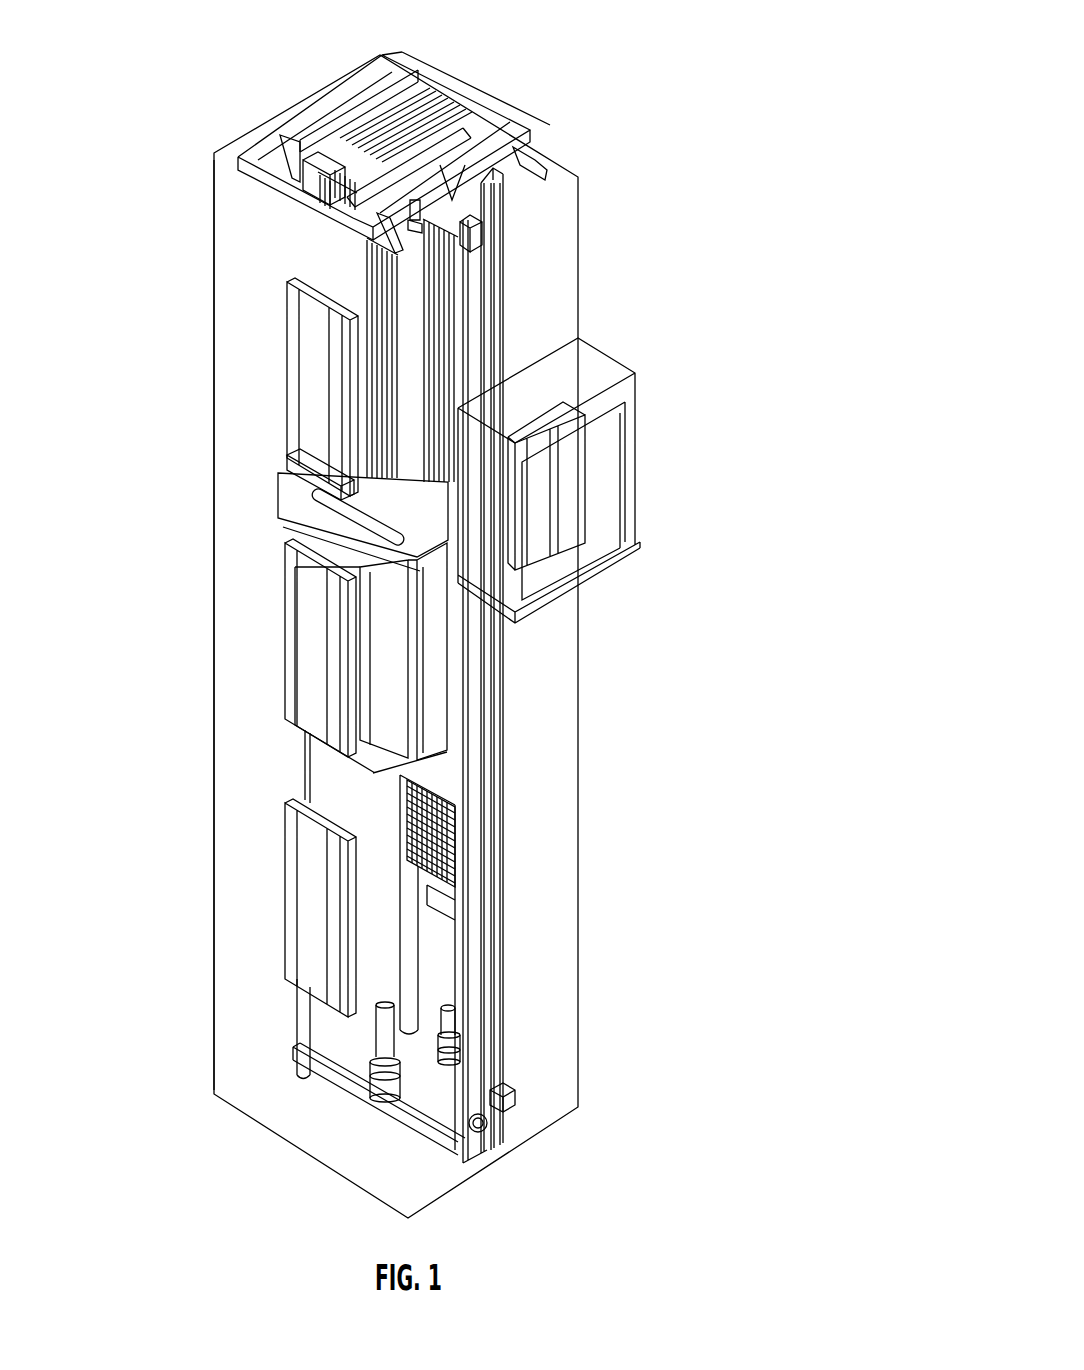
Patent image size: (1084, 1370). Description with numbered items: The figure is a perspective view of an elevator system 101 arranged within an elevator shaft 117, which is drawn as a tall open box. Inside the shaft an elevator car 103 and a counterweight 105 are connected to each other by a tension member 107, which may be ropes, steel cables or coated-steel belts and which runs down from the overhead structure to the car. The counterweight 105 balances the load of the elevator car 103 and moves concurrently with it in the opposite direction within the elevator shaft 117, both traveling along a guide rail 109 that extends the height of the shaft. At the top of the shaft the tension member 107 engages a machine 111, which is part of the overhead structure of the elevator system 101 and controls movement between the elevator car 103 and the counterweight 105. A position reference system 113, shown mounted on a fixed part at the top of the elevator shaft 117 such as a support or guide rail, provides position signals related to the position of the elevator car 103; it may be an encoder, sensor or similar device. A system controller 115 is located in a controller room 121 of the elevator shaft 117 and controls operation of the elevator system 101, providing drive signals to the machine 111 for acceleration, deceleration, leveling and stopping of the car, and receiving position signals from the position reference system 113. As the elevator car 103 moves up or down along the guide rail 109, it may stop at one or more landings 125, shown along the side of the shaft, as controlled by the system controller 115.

The elevator system 101 is at (595, 110).
The elevator car 103 is at (400, 683).
The counterweight 105 is at (457, 855).
The tension member 107 is at (398, 387).
The guide rail 109 is at (477, 777).
The machine 111 is at (315, 150).
The position reference system 113 is at (470, 240).
The system controller 115 is at (582, 492).
The elevator shaft 117 is at (234, 625).
The controller room 121 is at (640, 372).
The landings 125 is at (286, 368).